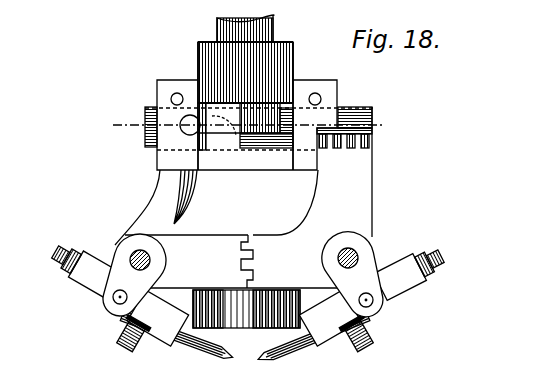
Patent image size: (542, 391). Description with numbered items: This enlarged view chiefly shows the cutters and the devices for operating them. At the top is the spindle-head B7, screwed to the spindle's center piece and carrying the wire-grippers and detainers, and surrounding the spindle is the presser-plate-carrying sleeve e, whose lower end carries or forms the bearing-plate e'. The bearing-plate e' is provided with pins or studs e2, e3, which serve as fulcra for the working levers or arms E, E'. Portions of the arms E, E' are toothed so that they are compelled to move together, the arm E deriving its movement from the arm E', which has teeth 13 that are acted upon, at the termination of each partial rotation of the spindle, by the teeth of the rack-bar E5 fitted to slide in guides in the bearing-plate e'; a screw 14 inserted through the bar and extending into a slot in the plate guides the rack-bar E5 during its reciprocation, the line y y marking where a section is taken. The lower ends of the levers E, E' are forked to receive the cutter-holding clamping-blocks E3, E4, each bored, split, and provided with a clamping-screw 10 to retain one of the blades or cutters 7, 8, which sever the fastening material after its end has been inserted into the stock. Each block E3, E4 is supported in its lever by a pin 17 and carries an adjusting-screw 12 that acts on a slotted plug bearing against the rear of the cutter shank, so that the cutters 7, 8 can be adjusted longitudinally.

The spindle-head B7 is at (273, 23).
The presser-plate-carrying sleeve e is at (253, 106).
The rack-bar E5 is at (360, 107).
The section line y is at (245, 126).
The screw 14 is at (181, 131).
The teeth 13 is at (353, 146).
The bearing-plate e' is at (156, 207).
The pin or stud e2 is at (132, 252).
The pin or stud e3 is at (356, 251).
The working lever or arm E is at (237, 261).
The working lever or arm E' is at (312, 187).
The cutter-holding clamping-block E3 is at (88, 296).
The cutter-holding clamping-block E4 is at (392, 297).
The adjusting-screw 12 is at (238, 265).
The pin 17 is at (118, 299).
The clamping-screw 10 is at (130, 345).
The blade or cutter 7 is at (177, 335).
The blade or cutter 8 is at (313, 333).